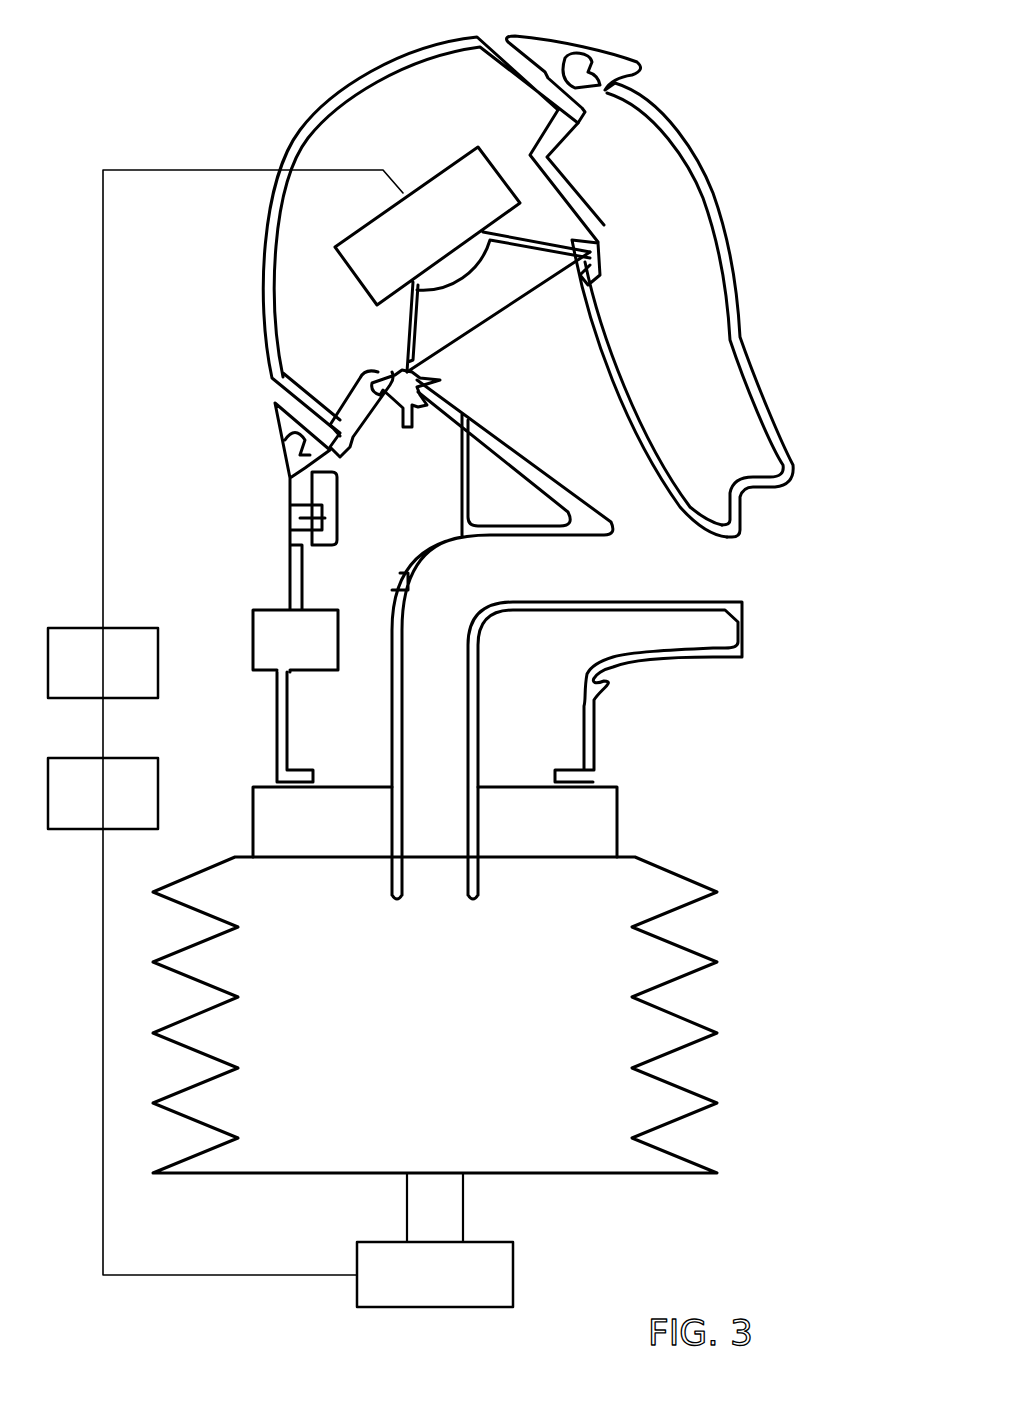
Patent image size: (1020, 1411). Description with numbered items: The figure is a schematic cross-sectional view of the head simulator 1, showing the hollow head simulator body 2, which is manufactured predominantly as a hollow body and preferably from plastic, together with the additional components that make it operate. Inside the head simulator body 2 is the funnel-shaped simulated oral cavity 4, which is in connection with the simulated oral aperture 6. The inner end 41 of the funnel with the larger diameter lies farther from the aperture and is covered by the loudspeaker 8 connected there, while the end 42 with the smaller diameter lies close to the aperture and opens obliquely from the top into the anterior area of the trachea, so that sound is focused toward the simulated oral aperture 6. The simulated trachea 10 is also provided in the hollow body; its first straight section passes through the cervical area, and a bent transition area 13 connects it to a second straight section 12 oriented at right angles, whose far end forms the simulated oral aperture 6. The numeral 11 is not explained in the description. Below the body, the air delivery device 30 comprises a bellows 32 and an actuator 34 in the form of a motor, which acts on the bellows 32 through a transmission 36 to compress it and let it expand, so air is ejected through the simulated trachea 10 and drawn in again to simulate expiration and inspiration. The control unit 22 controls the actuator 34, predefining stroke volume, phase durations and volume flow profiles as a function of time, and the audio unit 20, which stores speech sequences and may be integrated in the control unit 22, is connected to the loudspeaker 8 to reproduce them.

The head simulator 1 is at (726, 102).
The head simulator body 2 is at (735, 208).
The simulated oral cavity 4 is at (580, 386).
The simulated oral aperture 6 is at (742, 602).
The loudspeaker 8 is at (440, 238).
The simulated trachea 10 is at (364, 700).
The tube 11 is at (478, 738).
The second straight section 12 is at (553, 612).
The bent transition area 13 is at (420, 572).
The audio unit 20 is at (118, 676).
The control unit 22 is at (118, 808).
The air delivery device 30 is at (468, 1060).
The bellows 32 is at (715, 1020).
The actuator 34 is at (450, 1286).
The transmission 36 is at (465, 1188).
The end with the larger diameter 41 is at (418, 375).
The end with the smaller diameter 42 is at (606, 522).